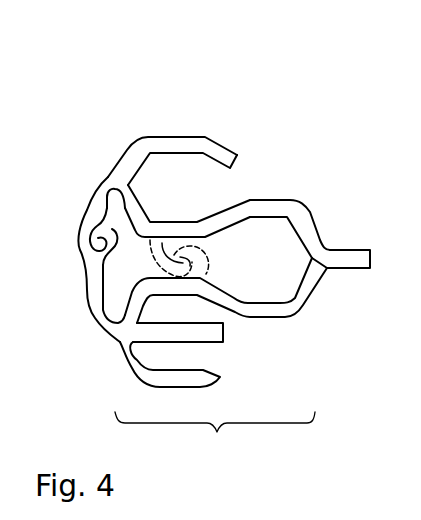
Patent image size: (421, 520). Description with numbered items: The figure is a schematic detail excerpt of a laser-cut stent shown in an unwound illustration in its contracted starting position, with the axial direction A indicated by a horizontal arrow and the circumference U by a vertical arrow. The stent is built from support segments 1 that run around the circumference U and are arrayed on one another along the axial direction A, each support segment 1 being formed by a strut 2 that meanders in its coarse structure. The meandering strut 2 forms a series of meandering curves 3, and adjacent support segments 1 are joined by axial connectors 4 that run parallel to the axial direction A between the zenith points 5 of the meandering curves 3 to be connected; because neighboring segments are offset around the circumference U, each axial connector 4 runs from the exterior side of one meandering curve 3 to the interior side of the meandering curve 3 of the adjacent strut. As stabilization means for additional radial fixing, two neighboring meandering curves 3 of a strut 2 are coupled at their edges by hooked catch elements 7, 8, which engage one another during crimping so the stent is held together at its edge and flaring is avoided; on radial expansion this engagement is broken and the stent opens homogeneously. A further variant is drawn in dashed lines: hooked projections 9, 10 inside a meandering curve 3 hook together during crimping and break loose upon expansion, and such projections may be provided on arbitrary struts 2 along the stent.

The support segment 1 is at (215, 436).
The strut 2 is at (297, 317).
The meandering curve 3 is at (160, 142).
The axial connector 4 is at (358, 258).
The zenith point 5 is at (105, 182).
The hooked catch element 7 is at (87, 230).
The hooked catch element 8 is at (100, 248).
The hooked projection 9 is at (190, 250).
The hooked projection 10 is at (165, 250).
The axial direction A is at (237, 47).
The circumference U is at (353, 290).